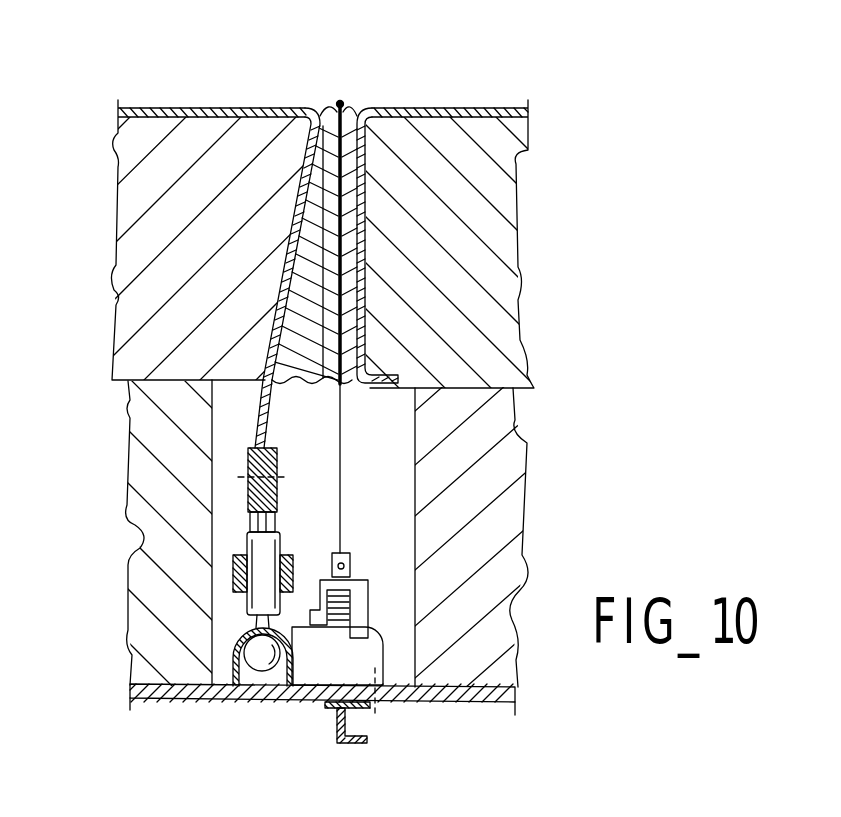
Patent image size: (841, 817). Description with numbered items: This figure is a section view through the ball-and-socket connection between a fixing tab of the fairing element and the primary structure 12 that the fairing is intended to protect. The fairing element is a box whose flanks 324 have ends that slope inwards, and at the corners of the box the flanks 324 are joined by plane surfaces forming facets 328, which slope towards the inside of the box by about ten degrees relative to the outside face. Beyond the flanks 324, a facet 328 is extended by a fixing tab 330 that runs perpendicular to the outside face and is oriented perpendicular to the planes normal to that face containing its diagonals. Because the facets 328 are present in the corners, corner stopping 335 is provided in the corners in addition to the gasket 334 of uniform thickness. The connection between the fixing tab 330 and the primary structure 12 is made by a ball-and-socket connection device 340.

The primary structure 12 is at (178, 698).
The flank 324 is at (366, 222).
The facet 328 is at (297, 222).
The fixing tab 330 is at (258, 422).
The gasket 334 is at (358, 108).
The corner stopping 335 is at (303, 310).
The ball-and-socket connection device 340 is at (364, 652).